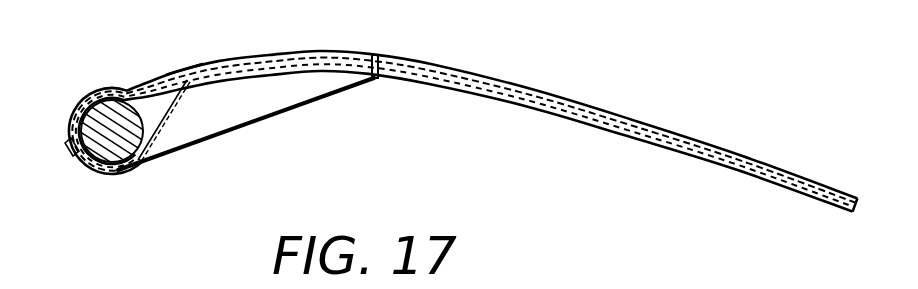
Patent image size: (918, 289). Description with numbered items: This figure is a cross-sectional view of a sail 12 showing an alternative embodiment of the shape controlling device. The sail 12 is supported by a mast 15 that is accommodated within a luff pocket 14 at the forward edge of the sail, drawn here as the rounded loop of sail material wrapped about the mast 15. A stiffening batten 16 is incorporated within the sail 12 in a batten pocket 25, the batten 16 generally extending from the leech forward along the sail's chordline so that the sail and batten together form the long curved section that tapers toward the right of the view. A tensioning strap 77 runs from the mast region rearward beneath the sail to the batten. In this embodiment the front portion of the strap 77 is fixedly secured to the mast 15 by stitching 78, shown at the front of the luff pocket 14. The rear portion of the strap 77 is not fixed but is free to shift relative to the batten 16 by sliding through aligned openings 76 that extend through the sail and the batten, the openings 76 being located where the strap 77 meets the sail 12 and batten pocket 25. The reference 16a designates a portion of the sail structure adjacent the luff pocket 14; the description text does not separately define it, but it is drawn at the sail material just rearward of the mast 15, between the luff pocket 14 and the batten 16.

The sail 12 is at (646, 104).
The luff pocket 14 is at (170, 112).
The mast 15 is at (105, 172).
The batten 16 is at (617, 130).
The strip portion 16a is at (170, 86).
The batten pocket 25 is at (668, 147).
The aligned openings 76 is at (378, 58).
The strap 77 is at (259, 124).
The stitching 78 is at (70, 152).